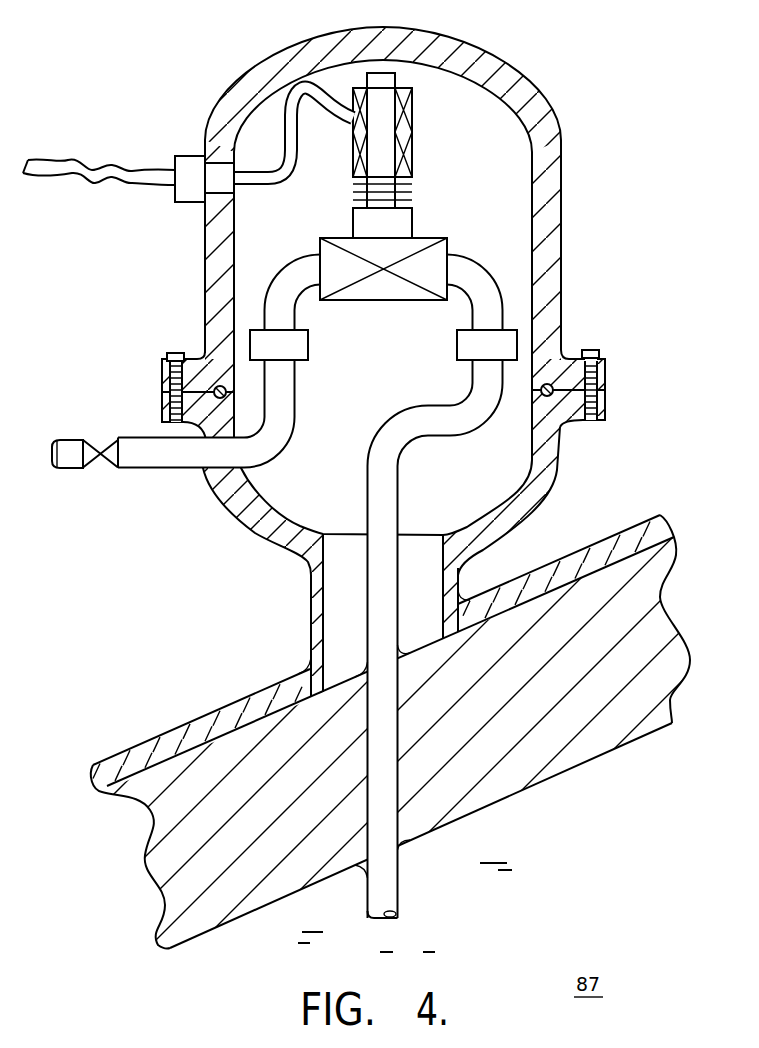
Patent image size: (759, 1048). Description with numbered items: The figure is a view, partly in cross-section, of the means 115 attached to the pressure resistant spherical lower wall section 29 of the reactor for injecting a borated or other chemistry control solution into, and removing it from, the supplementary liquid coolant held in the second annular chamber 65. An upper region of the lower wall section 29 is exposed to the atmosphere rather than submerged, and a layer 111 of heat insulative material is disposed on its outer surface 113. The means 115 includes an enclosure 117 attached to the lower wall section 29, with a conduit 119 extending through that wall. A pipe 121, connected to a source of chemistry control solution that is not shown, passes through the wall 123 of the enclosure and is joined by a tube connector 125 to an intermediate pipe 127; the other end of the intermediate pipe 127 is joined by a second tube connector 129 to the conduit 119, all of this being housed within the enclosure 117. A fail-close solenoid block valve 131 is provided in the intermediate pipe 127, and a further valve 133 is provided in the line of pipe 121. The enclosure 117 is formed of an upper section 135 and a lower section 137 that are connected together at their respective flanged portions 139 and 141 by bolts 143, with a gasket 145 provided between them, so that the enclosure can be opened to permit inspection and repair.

The pressure resistant spherical lower wall section 29 is at (152, 772).
The annular chamber 65 is at (218, 945).
The layer of heat insulative material 111 is at (634, 532).
The outer surface 113 is at (596, 568).
The means for injecting and removing chemistry control solution 115 is at (208, 66).
The enclosure 117 is at (240, 522).
The conduit 119 is at (400, 880).
The pipe 121 is at (173, 465).
The wall of the enclosure 123 is at (235, 500).
The tube connector 125 is at (308, 346).
The intermediate pipe 127 is at (318, 250).
The tube connector 129 is at (532, 313).
The solenoid block valve 131 is at (430, 194).
The valve 133 is at (108, 462).
The upper section 135 is at (185, 245).
The lower section 137 is at (266, 584).
The flanged portion 139 is at (193, 362).
The flanged portion 141 is at (162, 402).
The bolts 143 is at (592, 350).
The gasket 145 is at (575, 422).